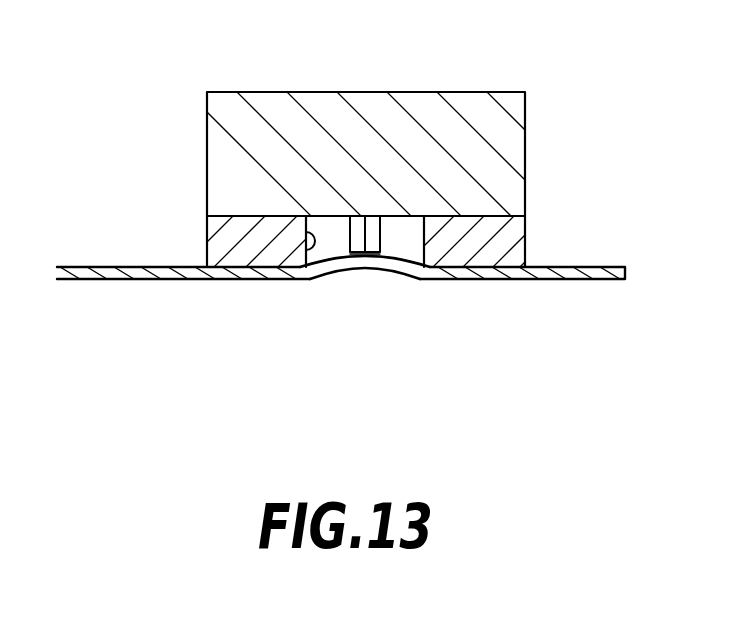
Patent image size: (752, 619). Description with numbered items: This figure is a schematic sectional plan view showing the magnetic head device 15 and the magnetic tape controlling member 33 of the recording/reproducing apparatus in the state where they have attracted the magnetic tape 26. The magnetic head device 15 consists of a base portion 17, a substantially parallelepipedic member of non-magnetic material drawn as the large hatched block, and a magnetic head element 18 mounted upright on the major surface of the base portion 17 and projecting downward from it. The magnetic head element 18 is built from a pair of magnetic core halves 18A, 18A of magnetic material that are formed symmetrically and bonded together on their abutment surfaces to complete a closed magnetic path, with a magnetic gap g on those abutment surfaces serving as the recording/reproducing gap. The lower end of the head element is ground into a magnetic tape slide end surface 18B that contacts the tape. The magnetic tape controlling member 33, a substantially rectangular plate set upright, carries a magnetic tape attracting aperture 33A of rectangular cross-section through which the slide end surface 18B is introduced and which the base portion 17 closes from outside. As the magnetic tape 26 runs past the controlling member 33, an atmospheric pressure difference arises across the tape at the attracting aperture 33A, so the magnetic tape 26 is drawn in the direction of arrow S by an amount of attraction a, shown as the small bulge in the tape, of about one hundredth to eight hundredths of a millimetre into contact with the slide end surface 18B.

The magnetic head device 15 is at (207, 92).
The base portion 17 is at (430, 123).
The magnetic tape controlling member 33 is at (225, 240).
The magnetic tape attracting aperture 33A is at (308, 249).
The magnetic tape 26 is at (80, 280).
The magnetic head element 18 is at (555, 358).
The magnetic core halves 18A is at (310, 279).
The magnetic tape slide end surface 18B is at (380, 269).
The magnetic gap g is at (360, 264).
The direction of tape attraction S is at (365, 297).
The amount of attraction a is at (400, 258).